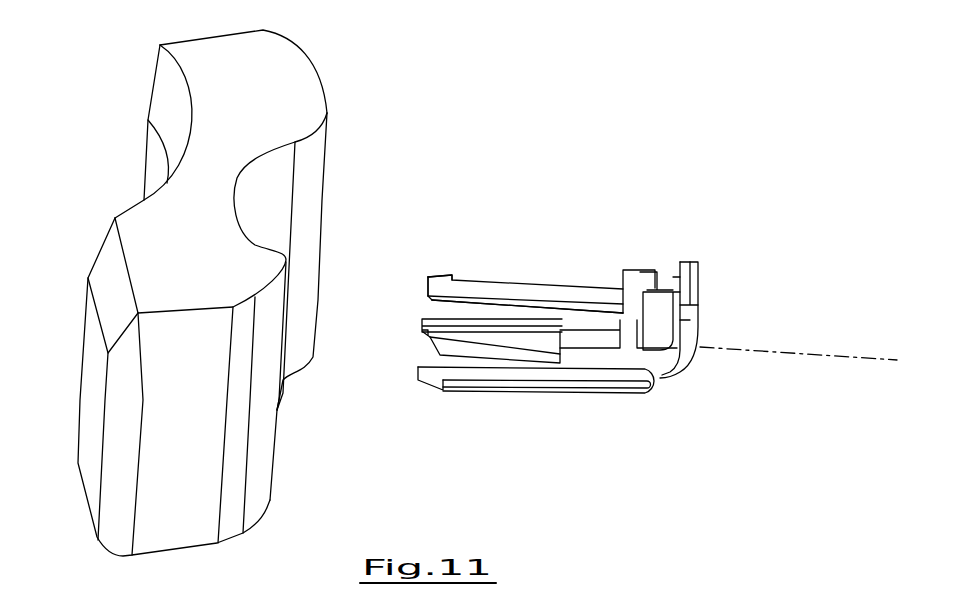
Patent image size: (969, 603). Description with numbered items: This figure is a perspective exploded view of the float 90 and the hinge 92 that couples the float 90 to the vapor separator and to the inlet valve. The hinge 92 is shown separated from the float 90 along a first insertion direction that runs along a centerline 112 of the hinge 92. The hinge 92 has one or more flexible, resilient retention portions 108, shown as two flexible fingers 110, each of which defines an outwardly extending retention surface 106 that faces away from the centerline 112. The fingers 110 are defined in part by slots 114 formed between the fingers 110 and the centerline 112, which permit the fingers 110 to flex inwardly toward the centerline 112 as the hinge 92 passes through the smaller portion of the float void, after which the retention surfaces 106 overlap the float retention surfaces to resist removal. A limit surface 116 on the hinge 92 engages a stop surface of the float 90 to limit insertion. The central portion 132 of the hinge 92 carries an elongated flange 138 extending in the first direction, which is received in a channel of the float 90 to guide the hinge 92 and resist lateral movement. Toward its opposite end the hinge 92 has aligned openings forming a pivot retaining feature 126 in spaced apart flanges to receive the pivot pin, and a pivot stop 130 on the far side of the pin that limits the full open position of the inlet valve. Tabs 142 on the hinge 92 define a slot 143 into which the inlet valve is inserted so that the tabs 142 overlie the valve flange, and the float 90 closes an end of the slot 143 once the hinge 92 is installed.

The float 90 is at (333, 54).
The hinge 92 is at (557, 320).
The retention surfaces 106 is at (455, 278).
The retention portions 108 is at (509, 278).
The flexible fingers 110 is at (533, 295).
The centerline 112 is at (832, 356).
The slots 114 is at (445, 310).
The limit surface 116 is at (560, 353).
The pivot retaining feature 126 is at (656, 307).
The pivot stop 130 is at (686, 293).
The central portion 132 is at (425, 334).
The elongated flange 138 is at (433, 348).
The tabs 142 is at (592, 295).
The slot 143 is at (578, 318).